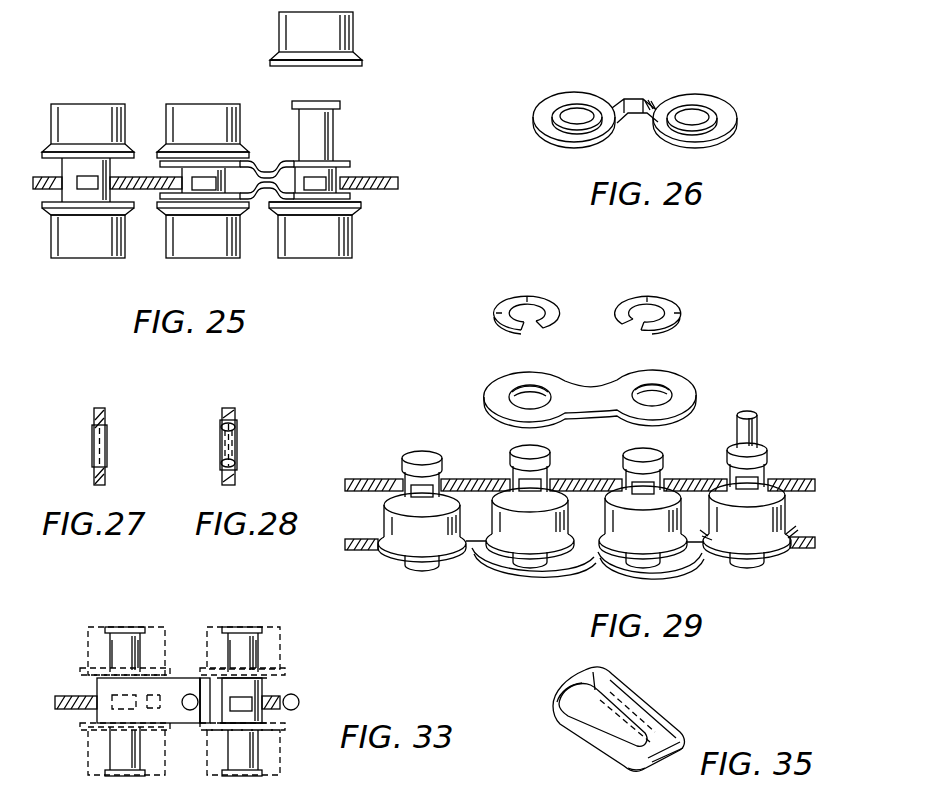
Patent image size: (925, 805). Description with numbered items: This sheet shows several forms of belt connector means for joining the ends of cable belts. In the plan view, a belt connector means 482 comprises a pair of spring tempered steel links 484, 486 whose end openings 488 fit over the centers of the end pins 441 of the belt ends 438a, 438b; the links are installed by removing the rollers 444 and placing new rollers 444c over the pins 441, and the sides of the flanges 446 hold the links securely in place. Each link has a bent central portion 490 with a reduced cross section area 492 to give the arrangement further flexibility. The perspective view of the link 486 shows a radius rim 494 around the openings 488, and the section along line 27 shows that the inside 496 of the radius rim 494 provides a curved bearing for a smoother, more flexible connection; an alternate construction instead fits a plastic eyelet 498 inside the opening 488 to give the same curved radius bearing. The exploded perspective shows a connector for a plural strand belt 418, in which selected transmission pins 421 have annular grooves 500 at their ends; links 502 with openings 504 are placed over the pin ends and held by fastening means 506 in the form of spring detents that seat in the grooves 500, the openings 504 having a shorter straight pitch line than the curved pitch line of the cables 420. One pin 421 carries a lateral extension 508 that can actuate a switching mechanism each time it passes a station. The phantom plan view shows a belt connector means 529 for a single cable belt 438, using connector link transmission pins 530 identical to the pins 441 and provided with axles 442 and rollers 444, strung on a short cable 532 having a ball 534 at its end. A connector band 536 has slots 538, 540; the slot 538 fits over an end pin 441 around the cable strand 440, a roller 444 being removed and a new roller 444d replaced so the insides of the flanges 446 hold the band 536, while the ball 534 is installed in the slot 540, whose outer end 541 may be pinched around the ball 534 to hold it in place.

In FIG. 25, the belt end 438a is at (137, 97).
In FIG. 25, the belt end 438b is at (368, 146).
In FIG. 33, the single cable belt 438 is at (80, 688).
In FIG. 25, the end pin 441 is at (188, 179).
In FIG. 33, the end pin 441 is at (110, 712).
In FIG. 25, the roller 444c is at (345, 33).
In FIG. 33, the roller 444 is at (90, 648).
In FIG. 33, the new roller 444d is at (87, 775).
In FIG. 25, the flange 446 is at (355, 63).
In FIG. 33, the flange 446 is at (85, 672).
In FIG. 33, the axle 442 is at (128, 660).
In FIG. 33, the cable strand 440 is at (62, 712).
In FIG. 25, the belt connector means 482 is at (259, 161).
In FIG. 25, the link 484 is at (258, 160).
In FIG. 25, the link 486 is at (253, 200).
In FIG. 26, the link 486 is at (726, 128).
In FIG. 25, the end opening 488 is at (336, 160).
In FIG. 26, the end opening 488 is at (698, 117).
In FIG. 28, the end opening 488 is at (236, 443).
In FIG. 25, the bent central portion 490 is at (280, 168).
In FIG. 26, the bent central portion 490 is at (637, 99).
In FIG. 26, the reduced cross section area 492 is at (645, 98).
In FIG. 26, the radius rim 494 is at (580, 104).
In FIG. 27, the radius rim 494 is at (102, 430).
In FIG. 27, the inside of radius rim 496 is at (95, 432).
In FIG. 28, the plastic eyelet 498 is at (236, 426).
In FIG. 26, the section line 27— 27 is at (701, 160).
In FIG. 29, the plural strand belt 418 is at (478, 572).
In FIG. 29, the cable 420 is at (712, 470).
In FIG. 29, the transmission pin 421 is at (405, 455).
In FIG. 29, the annular groove 500 is at (514, 472).
In FIG. 29, the link 502 is at (590, 397).
In FIG. 29, the opening 504 is at (528, 397).
In FIG. 29, the fastening means 506 is at (552, 304).
In FIG. 29, the lateral extension 508 is at (752, 436).
In FIG. 33, the belt connector means 529 is at (295, 667).
In FIG. 33, the connector link transmission pin 530 is at (265, 681).
In FIG. 33, the cable 532 is at (272, 724).
In FIG. 33, the ball 534 is at (300, 702).
In FIG. 33, the connector band 536 is at (175, 688).
In FIG. 35, the connector band 536 is at (640, 706).
In FIG. 35, the slot 538 is at (556, 722).
In FIG. 35, the slot 540 is at (658, 760).
In FIG. 33, the outer end of slot 541 is at (200, 725).
In FIG. 35, the outer end of slot 541 is at (628, 768).